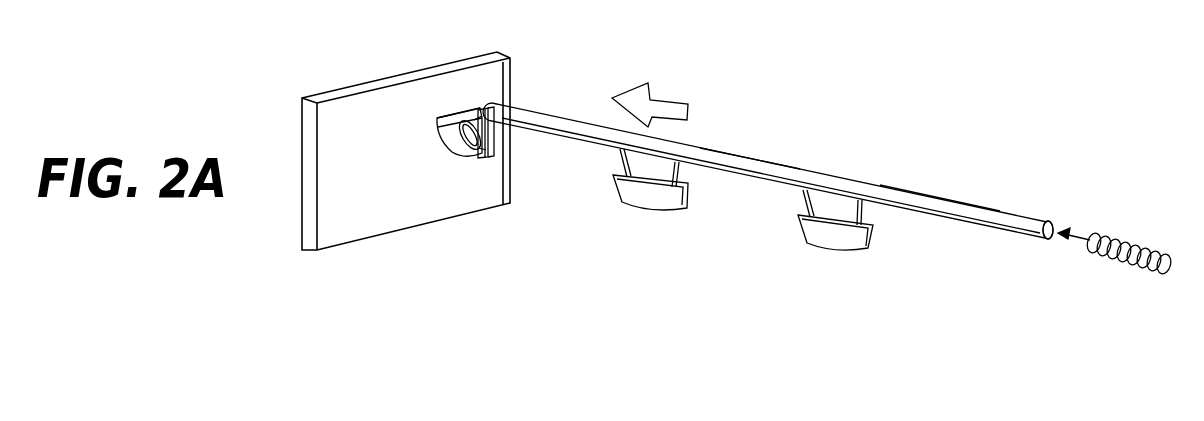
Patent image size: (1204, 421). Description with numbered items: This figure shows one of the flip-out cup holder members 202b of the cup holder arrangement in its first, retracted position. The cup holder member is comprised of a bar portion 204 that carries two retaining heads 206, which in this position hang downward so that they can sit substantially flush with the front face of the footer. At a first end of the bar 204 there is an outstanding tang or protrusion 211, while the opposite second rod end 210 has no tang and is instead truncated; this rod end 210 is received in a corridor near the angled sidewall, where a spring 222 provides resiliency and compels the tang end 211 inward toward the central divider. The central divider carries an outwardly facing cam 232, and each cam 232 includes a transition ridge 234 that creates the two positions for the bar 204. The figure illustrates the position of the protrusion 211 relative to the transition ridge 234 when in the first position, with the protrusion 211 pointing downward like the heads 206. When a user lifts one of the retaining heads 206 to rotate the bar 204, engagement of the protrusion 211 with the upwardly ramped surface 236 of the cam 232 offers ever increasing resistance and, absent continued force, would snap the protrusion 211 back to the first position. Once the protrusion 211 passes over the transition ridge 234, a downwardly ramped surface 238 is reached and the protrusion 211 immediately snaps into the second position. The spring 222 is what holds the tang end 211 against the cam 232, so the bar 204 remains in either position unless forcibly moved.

The flip-out cup holder member 202b is at (706, 140).
The bar portion 204 is at (733, 158).
The retaining head 206 is at (668, 203).
The second rod end 210 is at (1048, 223).
The tang/protrusion 211 is at (490, 137).
The spring 222 is at (1127, 240).
The cam 232 is at (457, 163).
The transition ridge 234 is at (463, 115).
The upwardly ramped surface 236 is at (472, 152).
The downwardly ramped surface 238 is at (472, 118).